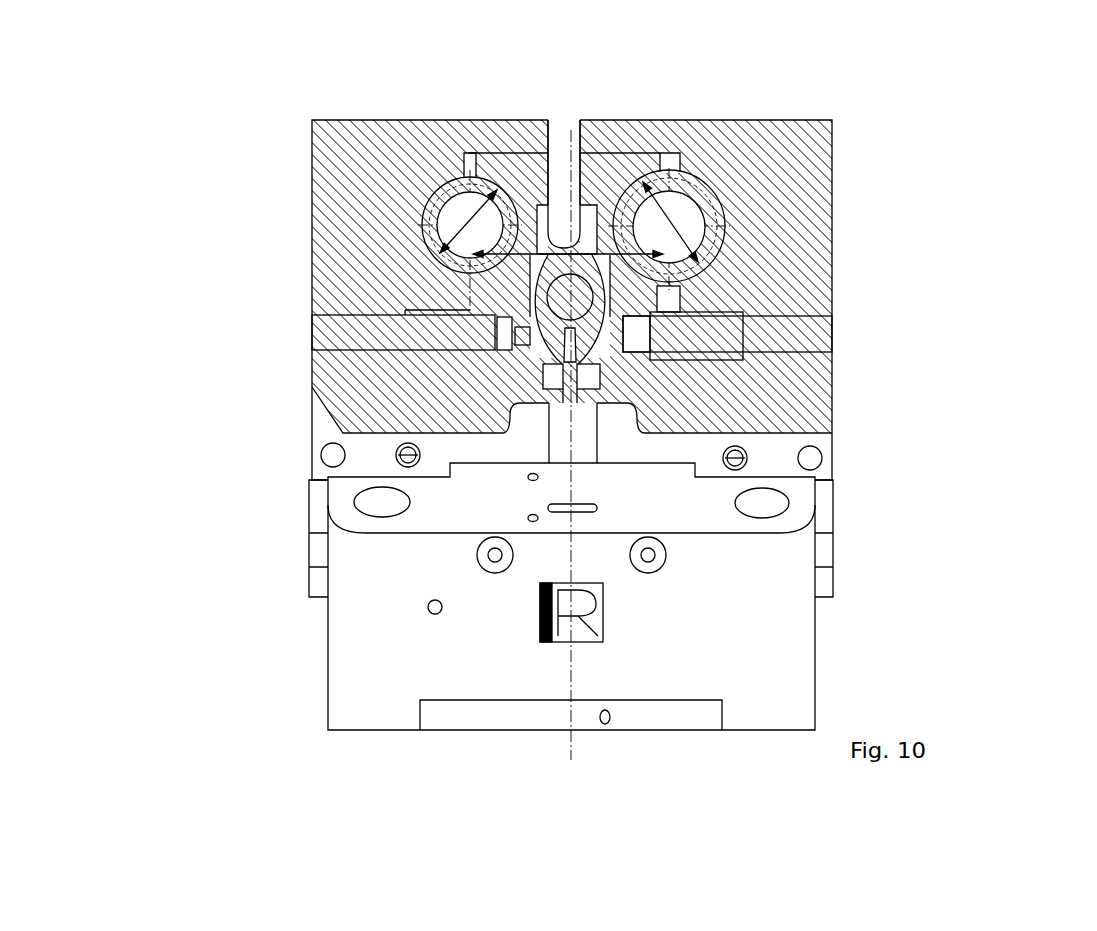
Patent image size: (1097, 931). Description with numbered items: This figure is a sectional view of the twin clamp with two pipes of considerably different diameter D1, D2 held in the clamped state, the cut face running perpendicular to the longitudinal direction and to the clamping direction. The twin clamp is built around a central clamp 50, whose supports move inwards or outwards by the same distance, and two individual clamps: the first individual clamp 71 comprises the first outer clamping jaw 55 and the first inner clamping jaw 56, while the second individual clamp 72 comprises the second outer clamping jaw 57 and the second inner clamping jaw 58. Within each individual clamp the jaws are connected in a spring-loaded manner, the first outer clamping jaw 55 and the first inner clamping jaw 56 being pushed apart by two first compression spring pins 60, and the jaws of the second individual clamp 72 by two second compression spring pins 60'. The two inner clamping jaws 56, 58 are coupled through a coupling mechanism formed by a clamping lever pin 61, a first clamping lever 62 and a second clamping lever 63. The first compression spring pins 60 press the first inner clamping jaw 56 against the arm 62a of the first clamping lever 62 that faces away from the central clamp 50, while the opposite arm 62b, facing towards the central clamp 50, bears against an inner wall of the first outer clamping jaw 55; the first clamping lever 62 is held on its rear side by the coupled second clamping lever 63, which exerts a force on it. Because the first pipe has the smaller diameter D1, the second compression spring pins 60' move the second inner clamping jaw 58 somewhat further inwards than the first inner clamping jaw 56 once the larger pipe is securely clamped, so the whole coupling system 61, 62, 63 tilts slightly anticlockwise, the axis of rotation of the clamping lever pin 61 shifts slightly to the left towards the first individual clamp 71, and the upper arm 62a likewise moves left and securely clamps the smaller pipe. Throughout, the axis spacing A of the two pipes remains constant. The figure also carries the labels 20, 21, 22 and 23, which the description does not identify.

The central clamp 50 is at (400, 705).
The first outer clamping jaw 55 is at (340, 178).
The second outer clamping jaw 57 is at (795, 182).
The first individual clamp 71 is at (348, 115).
The second individual clamp 72 is at (785, 105).
The first roller 20 is at (437, 225).
The bearing of first roller 21 is at (516, 222).
The second roller 22 is at (614, 227).
The bearing of second roller 23 is at (724, 235).
The diameter of the first pipe D1 is at (470, 225).
The diameter of the second pipe D2 is at (669, 226).
The axis spacing A is at (572, 252).
The first inner clamping jaw 56 is at (497, 292).
The second inner clamping jaw 58 is at (622, 283).
The first compression spring pins 60 is at (308, 335).
The second compression spring pins 60' is at (838, 342).
The clamping lever pin 61 is at (574, 290).
The first clamping lever 62 is at (547, 353).
The arm of the first clamping lever facing away from the central clamp 62a is at (550, 230).
The arm of the first clamping lever facing the central clamp 62b is at (547, 377).
The second clamping lever 63 is at (590, 342).